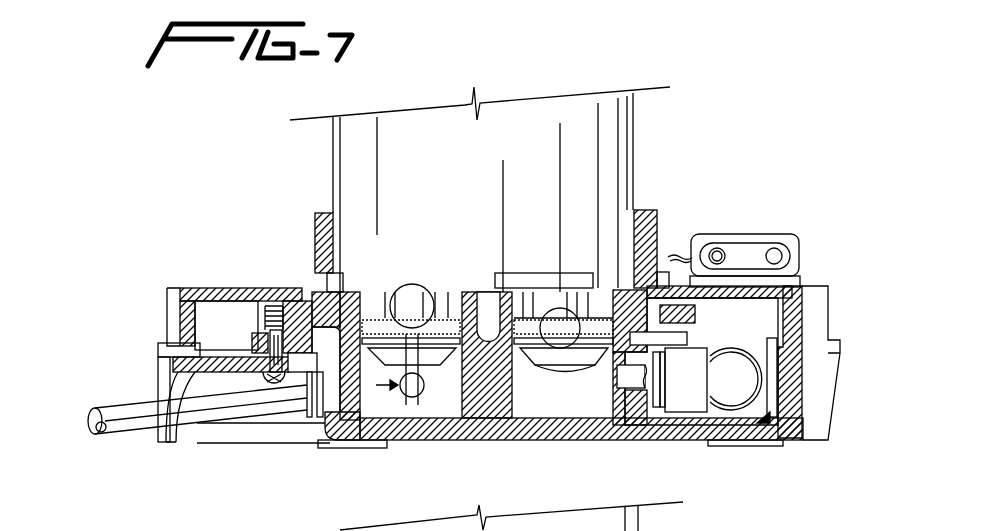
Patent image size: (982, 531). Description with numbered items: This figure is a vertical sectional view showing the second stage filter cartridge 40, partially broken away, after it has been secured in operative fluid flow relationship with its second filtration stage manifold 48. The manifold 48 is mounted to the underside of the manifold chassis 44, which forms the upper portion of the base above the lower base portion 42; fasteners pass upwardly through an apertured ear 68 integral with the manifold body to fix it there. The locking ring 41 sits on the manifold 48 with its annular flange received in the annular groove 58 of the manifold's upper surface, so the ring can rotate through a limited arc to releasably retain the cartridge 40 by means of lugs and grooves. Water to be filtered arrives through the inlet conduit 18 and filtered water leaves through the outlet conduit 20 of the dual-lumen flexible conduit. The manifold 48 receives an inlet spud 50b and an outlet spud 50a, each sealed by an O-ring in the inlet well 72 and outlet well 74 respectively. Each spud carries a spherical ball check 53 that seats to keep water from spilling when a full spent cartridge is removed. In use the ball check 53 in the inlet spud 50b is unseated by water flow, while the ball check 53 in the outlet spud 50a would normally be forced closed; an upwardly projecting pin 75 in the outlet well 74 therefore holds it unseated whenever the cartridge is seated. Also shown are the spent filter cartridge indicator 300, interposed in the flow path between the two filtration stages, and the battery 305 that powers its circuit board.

The inlet conduit 18 is at (102, 402).
The outlet conduit 20 is at (135, 435).
The second stage filter cartridge 40 is at (306, 180).
The locking ring 41 is at (657, 227).
The lower base portion 42 is at (452, 430).
The manifold chassis 44 is at (205, 288).
The second filtration stage manifold 48 is at (696, 319).
The outlet spud 50a is at (430, 418).
The inlet spud 50b is at (585, 368).
The spherical ball check 53 is at (410, 298).
The annular groove 58 is at (664, 325).
The apertured ear 68 is at (254, 347).
The inlet well 72 is at (537, 385).
The outlet well 74 is at (375, 392).
The upwardly projecting pin 75 is at (320, 380).
The spent filter cartridge indicator 300 is at (762, 419).
The battery 305 is at (742, 233).